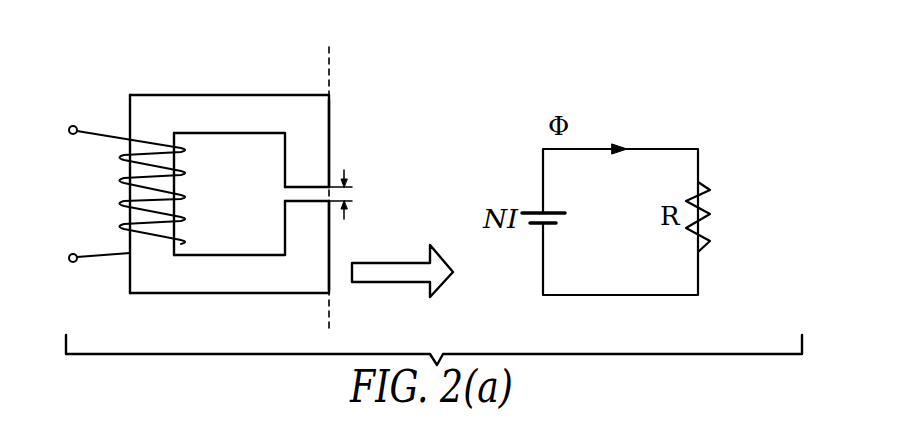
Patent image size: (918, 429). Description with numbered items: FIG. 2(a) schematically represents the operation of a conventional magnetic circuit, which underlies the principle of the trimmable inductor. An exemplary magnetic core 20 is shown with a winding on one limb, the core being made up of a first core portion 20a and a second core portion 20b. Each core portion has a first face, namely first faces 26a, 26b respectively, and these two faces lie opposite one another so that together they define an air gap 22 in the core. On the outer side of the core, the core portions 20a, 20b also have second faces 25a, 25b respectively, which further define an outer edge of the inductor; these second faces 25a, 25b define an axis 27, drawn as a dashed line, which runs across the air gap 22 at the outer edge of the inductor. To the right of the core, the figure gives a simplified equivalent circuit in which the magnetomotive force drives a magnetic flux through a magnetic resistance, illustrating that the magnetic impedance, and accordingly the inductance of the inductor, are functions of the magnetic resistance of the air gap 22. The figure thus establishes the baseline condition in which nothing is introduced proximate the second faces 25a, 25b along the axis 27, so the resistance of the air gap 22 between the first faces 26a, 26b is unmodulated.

The magnetic core 20 is at (229, 112).
The first core portion 20a is at (160, 113).
The second core portion 20b is at (160, 273).
The air gap 22 is at (344, 171).
The second face of first core portion 25a is at (329, 140).
The second face of second core portion 25b is at (329, 252).
The first face of first core portion 26a is at (306, 178).
The first face of second core portion 26b is at (303, 201).
The axis 27 is at (329, 68).